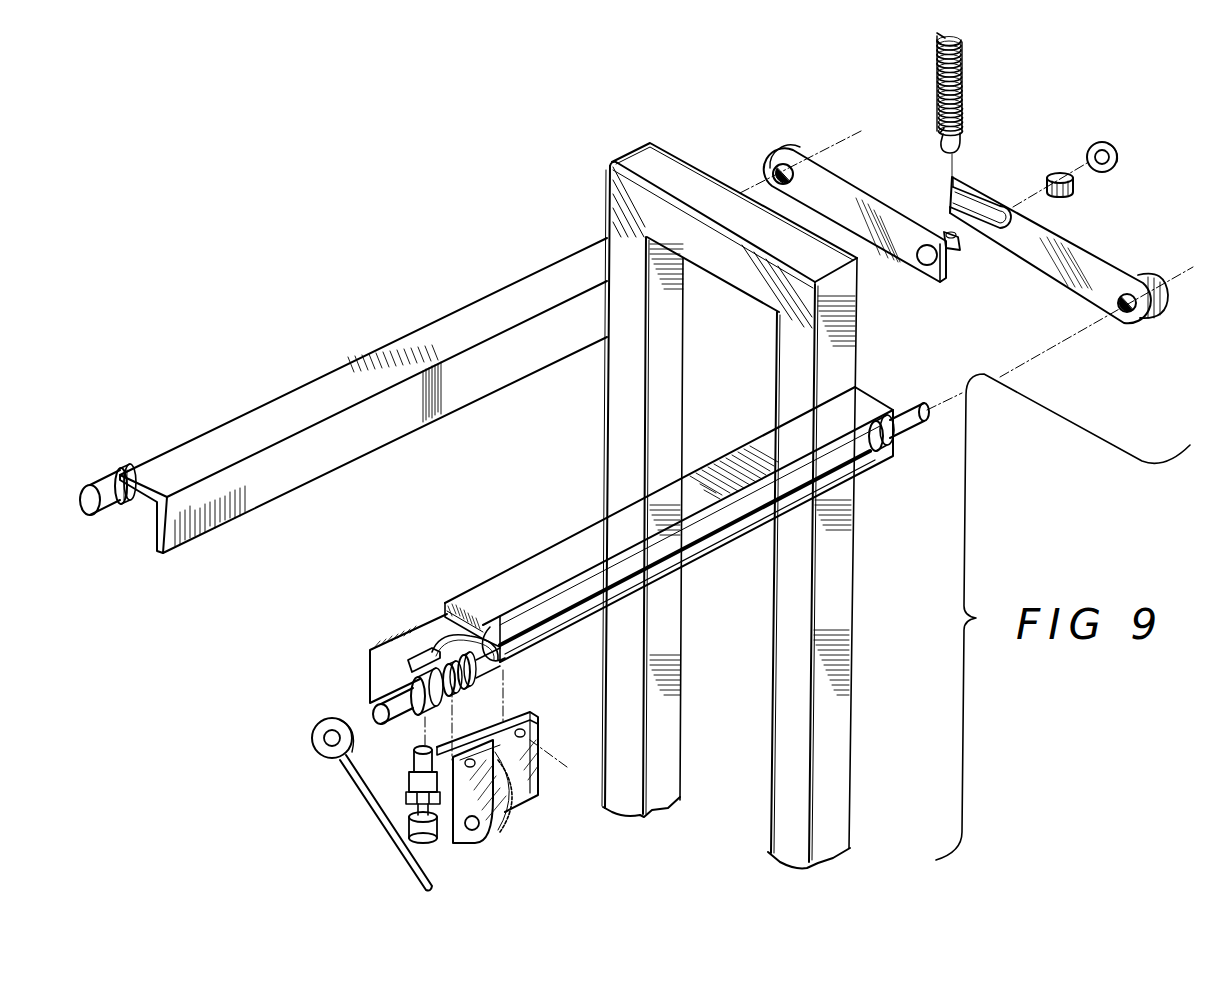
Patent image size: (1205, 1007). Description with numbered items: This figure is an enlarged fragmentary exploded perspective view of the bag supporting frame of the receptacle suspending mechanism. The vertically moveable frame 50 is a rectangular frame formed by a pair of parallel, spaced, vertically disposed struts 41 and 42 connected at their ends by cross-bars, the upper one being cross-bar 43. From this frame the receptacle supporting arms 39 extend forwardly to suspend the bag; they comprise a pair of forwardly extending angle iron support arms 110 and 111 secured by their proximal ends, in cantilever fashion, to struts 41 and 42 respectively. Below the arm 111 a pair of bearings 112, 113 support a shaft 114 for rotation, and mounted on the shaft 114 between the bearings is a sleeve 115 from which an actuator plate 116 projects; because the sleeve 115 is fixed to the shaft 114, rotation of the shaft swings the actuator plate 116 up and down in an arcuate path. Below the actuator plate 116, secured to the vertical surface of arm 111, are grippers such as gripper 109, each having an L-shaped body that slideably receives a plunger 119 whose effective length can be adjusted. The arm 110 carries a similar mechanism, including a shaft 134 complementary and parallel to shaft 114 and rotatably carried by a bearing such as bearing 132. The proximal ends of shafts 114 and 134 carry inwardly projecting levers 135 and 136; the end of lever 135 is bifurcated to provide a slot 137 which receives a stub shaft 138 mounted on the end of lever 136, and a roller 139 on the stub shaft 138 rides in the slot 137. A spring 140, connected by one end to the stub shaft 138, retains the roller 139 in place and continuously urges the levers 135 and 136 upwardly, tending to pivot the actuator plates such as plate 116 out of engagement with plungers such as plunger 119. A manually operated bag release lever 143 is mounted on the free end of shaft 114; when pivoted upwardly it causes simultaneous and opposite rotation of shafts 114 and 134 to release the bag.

The receptacle supporting arms 39 is at (336, 364).
The strut 41 is at (618, 387).
The strut 42 is at (842, 582).
The cross-bar 43 is at (700, 190).
The vertically moveable frame 50 is at (600, 223).
The gripper 109 is at (496, 839).
The angle iron support arm 110 is at (447, 398).
The angle iron support arm 111 is at (521, 573).
The bearing 112 is at (420, 679).
The bearing 113 is at (896, 445).
The shaft 114 is at (908, 415).
The sleeve 115 is at (648, 562).
The actuator plate 116 is at (430, 644).
The plunger 119 is at (416, 762).
The bearing 132 is at (112, 478).
The shaft 134 is at (86, 496).
The lever 135 is at (1098, 273).
The lever 136 is at (847, 205).
The slot 137 is at (968, 205).
The stub shaft 138 is at (951, 247).
The roller 139 is at (1073, 185).
The spring 140 is at (963, 94).
The bag release lever 143 is at (389, 825).